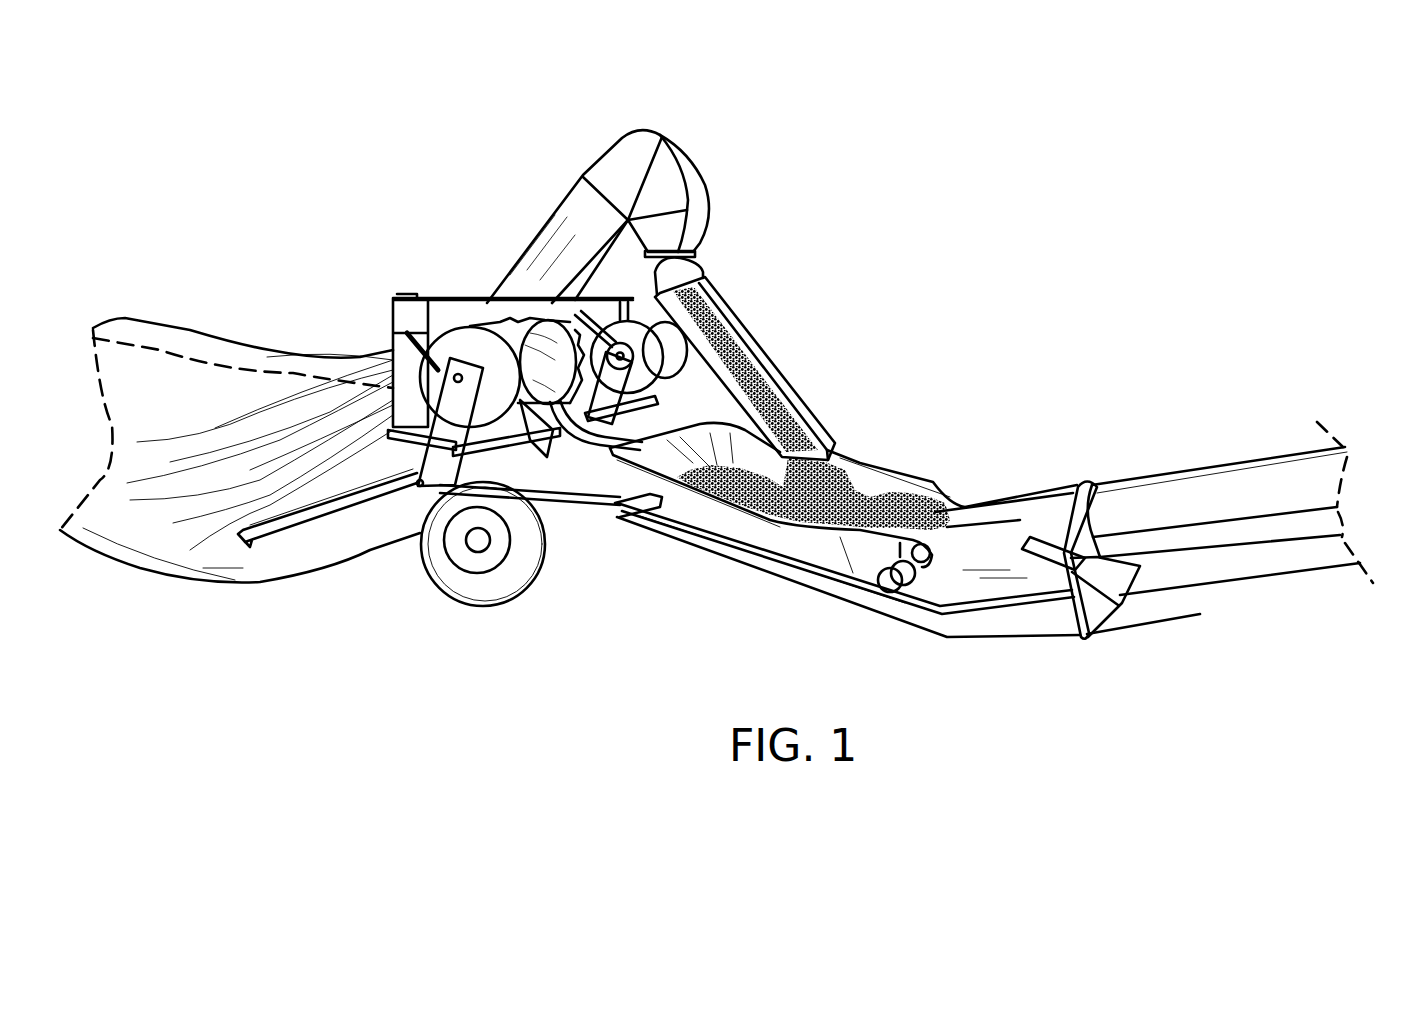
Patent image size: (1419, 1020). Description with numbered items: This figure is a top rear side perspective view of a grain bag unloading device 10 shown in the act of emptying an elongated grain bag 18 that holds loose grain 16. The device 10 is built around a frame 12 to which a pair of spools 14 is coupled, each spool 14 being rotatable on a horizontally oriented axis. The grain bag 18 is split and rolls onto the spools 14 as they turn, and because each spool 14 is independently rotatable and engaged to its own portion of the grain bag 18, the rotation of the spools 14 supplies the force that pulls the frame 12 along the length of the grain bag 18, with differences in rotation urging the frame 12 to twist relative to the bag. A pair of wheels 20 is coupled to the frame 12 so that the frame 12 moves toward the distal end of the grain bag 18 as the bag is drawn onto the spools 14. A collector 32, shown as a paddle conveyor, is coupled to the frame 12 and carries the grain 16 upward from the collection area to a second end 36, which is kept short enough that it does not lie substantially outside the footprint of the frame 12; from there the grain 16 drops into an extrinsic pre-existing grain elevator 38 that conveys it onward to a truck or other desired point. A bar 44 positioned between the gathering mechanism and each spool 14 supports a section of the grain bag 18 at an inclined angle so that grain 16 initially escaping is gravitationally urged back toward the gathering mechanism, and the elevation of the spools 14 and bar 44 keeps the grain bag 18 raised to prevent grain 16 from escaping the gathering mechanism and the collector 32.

The grain bag unloading device 10 is at (805, 393).
The frame 12 is at (553, 430).
The spool 14 is at (647, 371).
The grain 16 is at (200, 400).
The grain bag 18 is at (263, 558).
The wheel 20 is at (518, 573).
The collector 32 is at (557, 250).
The second end 36 is at (698, 256).
The grain elevator 38 is at (1220, 507).
The bar 44 is at (377, 493).